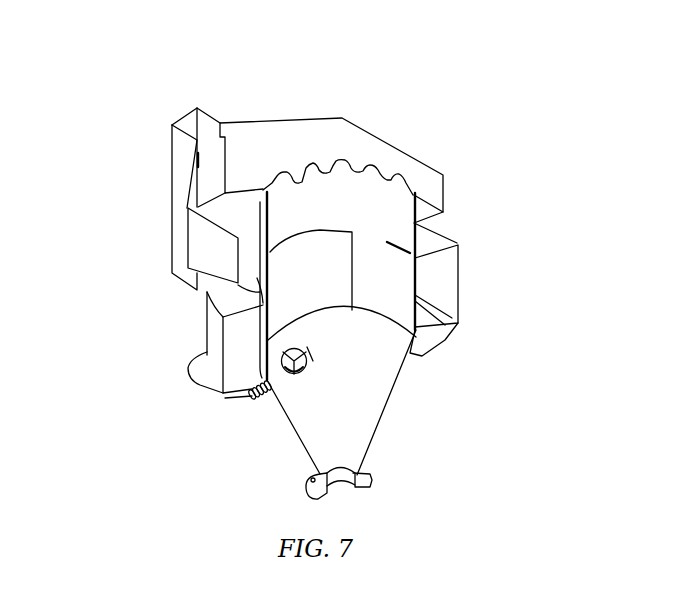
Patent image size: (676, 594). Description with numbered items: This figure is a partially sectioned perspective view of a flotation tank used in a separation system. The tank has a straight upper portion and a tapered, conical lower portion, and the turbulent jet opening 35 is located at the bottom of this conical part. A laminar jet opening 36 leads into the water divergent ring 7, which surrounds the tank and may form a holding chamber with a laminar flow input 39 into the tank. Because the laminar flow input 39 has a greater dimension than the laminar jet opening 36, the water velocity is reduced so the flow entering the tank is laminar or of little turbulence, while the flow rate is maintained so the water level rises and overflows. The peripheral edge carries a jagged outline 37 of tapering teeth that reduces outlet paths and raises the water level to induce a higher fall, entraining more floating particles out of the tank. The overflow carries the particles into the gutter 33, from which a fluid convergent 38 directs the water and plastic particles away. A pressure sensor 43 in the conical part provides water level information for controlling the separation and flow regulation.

The water divergent ring 7 is at (458, 247).
The gutter 33 is at (252, 120).
The turbulent jet opening 35 is at (293, 375).
The laminar jet opening 36 is at (432, 348).
The jagged outline 37 is at (345, 158).
The fluid convergent 38 is at (170, 143).
The laminar flow input 39 is at (317, 273).
The pressure sensor 43 is at (257, 393).